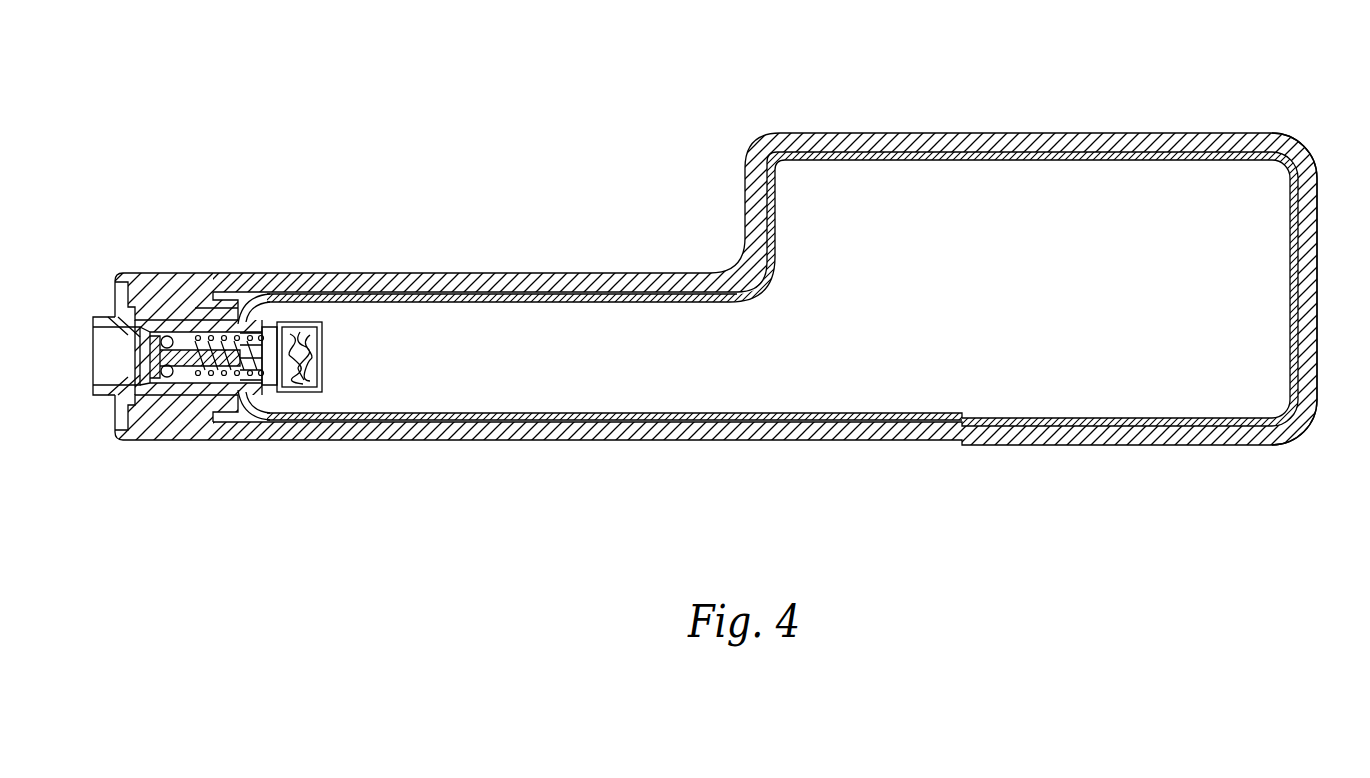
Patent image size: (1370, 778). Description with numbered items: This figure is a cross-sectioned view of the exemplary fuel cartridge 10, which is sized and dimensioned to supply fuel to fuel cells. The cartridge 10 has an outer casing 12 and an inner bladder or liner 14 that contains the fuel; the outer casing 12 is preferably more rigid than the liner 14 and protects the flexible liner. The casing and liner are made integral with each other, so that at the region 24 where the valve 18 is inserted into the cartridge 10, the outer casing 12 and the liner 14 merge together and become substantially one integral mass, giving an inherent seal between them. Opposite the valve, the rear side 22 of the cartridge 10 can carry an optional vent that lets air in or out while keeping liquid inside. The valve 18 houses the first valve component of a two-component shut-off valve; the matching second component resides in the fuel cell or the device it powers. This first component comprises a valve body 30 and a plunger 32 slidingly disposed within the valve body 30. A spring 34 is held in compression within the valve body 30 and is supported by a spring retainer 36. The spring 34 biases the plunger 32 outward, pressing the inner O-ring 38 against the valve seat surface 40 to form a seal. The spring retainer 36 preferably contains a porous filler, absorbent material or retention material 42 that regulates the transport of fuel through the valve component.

The fuel cartridge 10 is at (550, 170).
The outer casing 12 is at (863, 129).
The inner bladder or liner 14 is at (996, 183).
The valve 18 is at (105, 415).
The rear side 22 is at (1317, 165).
The region 24 is at (197, 270).
The valve body 30 is at (157, 392).
The plunger 32 is at (190, 393).
The spring 34 is at (217, 397).
The spring retainer 36 is at (263, 390).
The inner O-ring 38 is at (182, 393).
The valve seat surface 40 is at (167, 336).
The porous filler, absorbent material or retention material 42 is at (310, 397).